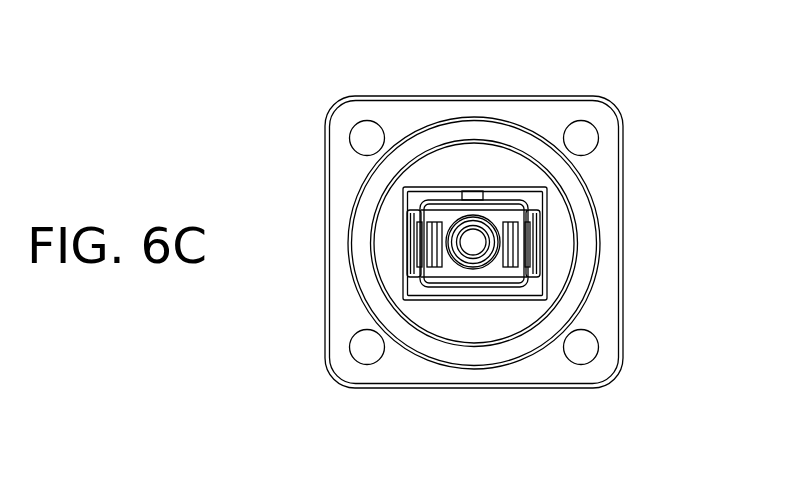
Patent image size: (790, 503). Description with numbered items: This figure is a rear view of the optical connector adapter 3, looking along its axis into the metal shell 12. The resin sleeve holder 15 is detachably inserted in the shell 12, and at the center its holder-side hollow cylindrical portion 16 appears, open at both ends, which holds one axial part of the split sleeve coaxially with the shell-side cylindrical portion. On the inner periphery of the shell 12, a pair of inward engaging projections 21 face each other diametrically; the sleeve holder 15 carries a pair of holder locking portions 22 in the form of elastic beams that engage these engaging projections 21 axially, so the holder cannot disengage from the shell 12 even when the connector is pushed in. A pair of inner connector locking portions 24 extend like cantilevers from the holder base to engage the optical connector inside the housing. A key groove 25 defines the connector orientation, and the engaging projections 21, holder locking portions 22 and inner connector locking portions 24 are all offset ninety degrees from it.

The optical connector adapter 3 is at (599, 94).
The metal shell 12 is at (527, 143).
The key groove 25 is at (473, 191).
The holder-side hollow cylindrical portion 16 is at (483, 223).
The sleeve holder 15 is at (523, 242).
The engaging projections 21 is at (412, 248).
The holder locking portions 22 is at (417, 258).
The inner connector locking portions 24 is at (430, 235).